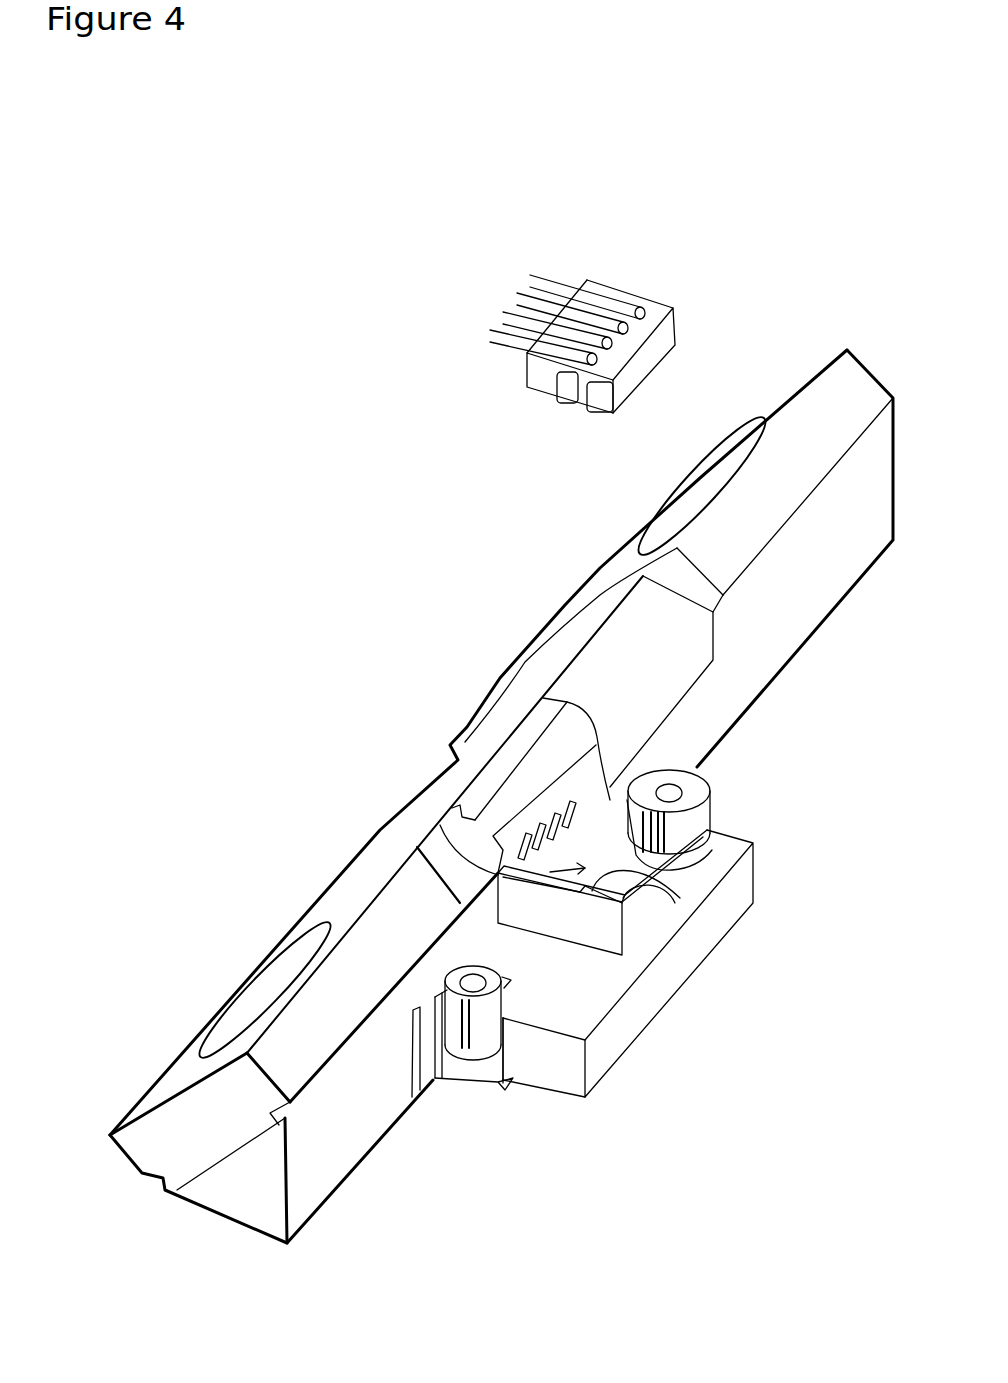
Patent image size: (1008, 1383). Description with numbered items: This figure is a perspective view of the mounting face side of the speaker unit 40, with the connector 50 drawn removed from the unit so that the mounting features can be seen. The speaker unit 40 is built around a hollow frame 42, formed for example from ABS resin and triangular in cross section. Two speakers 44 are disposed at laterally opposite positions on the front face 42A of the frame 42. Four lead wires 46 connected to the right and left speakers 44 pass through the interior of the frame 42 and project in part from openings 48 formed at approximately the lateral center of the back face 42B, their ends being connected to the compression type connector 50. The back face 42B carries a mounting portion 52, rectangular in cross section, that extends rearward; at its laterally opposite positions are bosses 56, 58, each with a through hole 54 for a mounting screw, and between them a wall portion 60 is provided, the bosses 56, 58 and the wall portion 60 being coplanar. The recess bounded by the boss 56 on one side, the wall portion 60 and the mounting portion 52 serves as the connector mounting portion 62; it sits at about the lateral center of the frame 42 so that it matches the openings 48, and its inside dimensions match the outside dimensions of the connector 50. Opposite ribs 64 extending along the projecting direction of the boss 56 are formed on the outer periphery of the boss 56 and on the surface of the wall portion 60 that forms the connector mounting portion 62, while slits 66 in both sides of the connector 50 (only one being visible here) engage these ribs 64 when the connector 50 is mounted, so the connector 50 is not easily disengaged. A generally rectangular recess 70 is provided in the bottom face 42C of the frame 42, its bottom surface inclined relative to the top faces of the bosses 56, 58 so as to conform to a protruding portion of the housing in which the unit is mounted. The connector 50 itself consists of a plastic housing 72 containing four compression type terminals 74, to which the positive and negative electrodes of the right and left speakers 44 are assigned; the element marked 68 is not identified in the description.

The speaker unit 40 is at (280, 432).
The frame 42 is at (237, 1207).
The front face 42A is at (387, 843).
The back face 42B is at (480, 928).
The bottom face 42C is at (417, 850).
The speakers 44 is at (743, 440).
The lead wires 46 is at (507, 337).
The openings 48 is at (640, 752).
The compression type connector 50 is at (587, 341).
The mounting portion 52 is at (670, 983).
The through hole 54 is at (680, 792).
The boss 56 is at (703, 820).
The boss 58 is at (497, 1032).
The wall portion 60 is at (630, 900).
The connector mounting portion 62 is at (440, 825).
The ribs 64 is at (705, 868).
The slits 66 is at (583, 403).
The tab 68 is at (462, 740).
The recess 70 is at (597, 657).
The housing 72 is at (643, 363).
The compression type terminals 74 is at (640, 297).